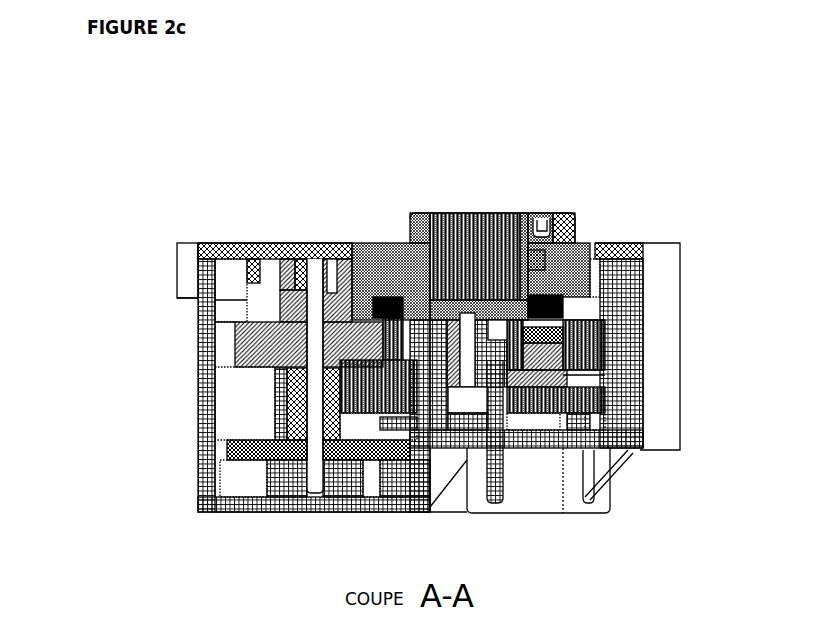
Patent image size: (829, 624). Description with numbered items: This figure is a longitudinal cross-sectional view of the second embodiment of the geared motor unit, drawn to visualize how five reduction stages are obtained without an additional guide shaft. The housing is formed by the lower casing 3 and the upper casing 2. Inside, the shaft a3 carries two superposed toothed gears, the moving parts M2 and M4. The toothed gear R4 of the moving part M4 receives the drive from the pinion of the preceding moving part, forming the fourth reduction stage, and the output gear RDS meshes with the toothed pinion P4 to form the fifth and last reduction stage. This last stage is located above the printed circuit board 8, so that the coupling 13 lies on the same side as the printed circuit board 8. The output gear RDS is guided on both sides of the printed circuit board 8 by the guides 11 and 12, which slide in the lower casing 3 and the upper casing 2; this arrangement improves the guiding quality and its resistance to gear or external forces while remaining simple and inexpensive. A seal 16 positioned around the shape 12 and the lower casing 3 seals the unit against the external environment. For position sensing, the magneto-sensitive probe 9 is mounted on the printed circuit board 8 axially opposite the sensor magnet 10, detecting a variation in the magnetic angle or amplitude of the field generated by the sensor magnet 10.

The lower casing 3 is at (250, 252).
The output gear RDS is at (358, 258).
The coupling 13 is at (463, 232).
The seal 16 is at (533, 235).
The guiding shape 12 is at (583, 243).
The sensor magnet 10 is at (563, 300).
The magneto-sensitive probe 9 is at (560, 333).
The printed circuit board 8 is at (560, 350).
The guiding shape 11 is at (510, 362).
The upper casing 2 is at (393, 513).
The shaft a3 is at (317, 485).
The moving part M2 is at (247, 442).
The toothed gear R4 is at (247, 357).
The toothed pinion P4 is at (277, 302).
The moving part M4 is at (110, 327).